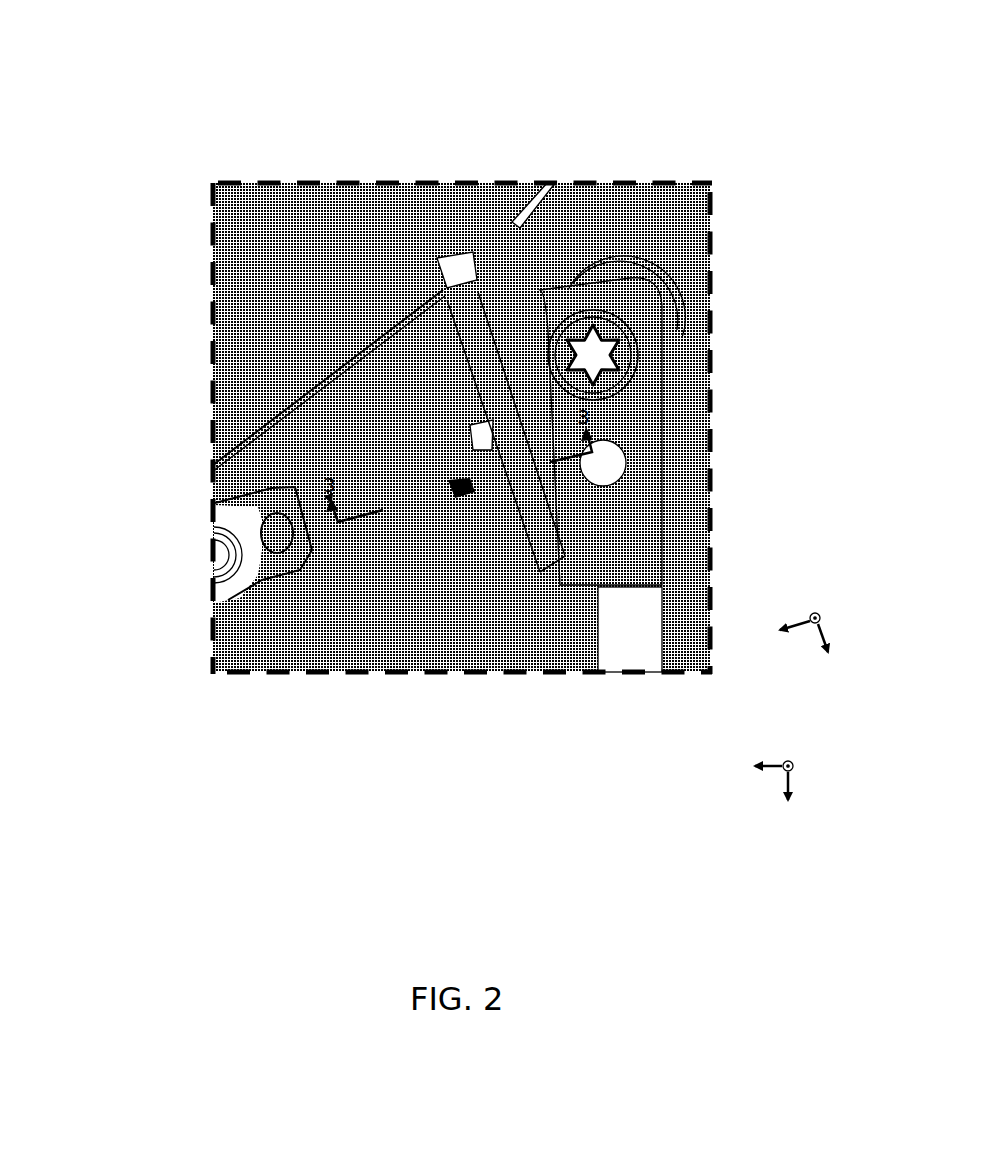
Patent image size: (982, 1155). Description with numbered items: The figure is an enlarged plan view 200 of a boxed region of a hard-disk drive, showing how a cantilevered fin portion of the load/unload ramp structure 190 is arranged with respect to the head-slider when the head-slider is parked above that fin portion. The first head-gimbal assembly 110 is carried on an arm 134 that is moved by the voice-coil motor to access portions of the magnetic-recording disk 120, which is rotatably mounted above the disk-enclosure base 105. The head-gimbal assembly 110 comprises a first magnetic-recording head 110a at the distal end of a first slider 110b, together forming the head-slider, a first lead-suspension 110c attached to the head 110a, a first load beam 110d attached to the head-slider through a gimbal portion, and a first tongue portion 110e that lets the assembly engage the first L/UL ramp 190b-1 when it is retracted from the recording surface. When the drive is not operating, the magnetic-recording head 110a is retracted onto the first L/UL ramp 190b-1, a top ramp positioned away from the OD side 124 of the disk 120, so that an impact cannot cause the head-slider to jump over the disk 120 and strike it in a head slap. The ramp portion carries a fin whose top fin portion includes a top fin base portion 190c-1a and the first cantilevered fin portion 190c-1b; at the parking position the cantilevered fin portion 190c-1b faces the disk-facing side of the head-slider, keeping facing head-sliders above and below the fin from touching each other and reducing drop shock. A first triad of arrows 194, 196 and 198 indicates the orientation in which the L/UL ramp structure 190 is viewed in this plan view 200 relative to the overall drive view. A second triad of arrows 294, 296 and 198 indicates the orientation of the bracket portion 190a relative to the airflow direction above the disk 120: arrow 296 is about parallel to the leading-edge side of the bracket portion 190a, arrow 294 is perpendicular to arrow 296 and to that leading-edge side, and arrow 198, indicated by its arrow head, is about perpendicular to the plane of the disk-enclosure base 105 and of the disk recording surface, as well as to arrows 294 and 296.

The plan view 200 is at (117, 78).
The disk-enclosure base 105 is at (418, 648).
The head-gimbal assembly 110 is at (130, 611).
The magnetic-recording head 110a is at (455, 490).
The slider 110b is at (512, 478).
The lead-suspension 110c is at (348, 553).
The load beam 110d is at (402, 505).
The tongue portion 110e is at (520, 472).
The magnetic-recording disk 120 is at (288, 218).
The OD side 124 is at (428, 297).
The arm 134 is at (237, 532).
The L/UL ramp structure 190 is at (818, 183).
The bracket portion 190a is at (628, 438).
The first L/UL ramp 190b-1 is at (470, 297).
The top fin base portion 190c-1a is at (477, 437).
The first cantilevered fin portion 190c-1b is at (458, 470).
The arrow 194 is at (775, 762).
The arrow 196 is at (793, 778).
The arrow 198 is at (818, 612).
The arrow 294 is at (802, 626).
The arrow 296 is at (825, 637).